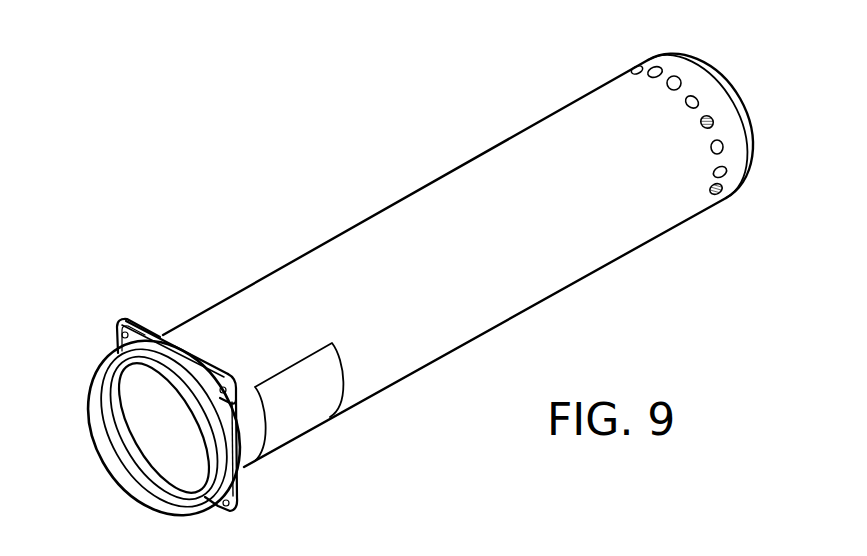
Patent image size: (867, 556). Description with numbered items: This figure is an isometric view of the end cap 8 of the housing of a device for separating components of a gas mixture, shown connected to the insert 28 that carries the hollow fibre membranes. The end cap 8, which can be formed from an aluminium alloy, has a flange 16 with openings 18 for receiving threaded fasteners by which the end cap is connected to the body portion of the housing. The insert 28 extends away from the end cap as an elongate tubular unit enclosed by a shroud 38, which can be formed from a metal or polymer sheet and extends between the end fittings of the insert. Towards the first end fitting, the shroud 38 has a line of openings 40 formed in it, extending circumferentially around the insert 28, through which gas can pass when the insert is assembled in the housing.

The end cap 8 is at (158, 502).
The flange 16 is at (155, 328).
The openings 18 is at (118, 328).
The insert 28 is at (386, 240).
The shroud 38 is at (563, 287).
The openings 40 is at (677, 81).